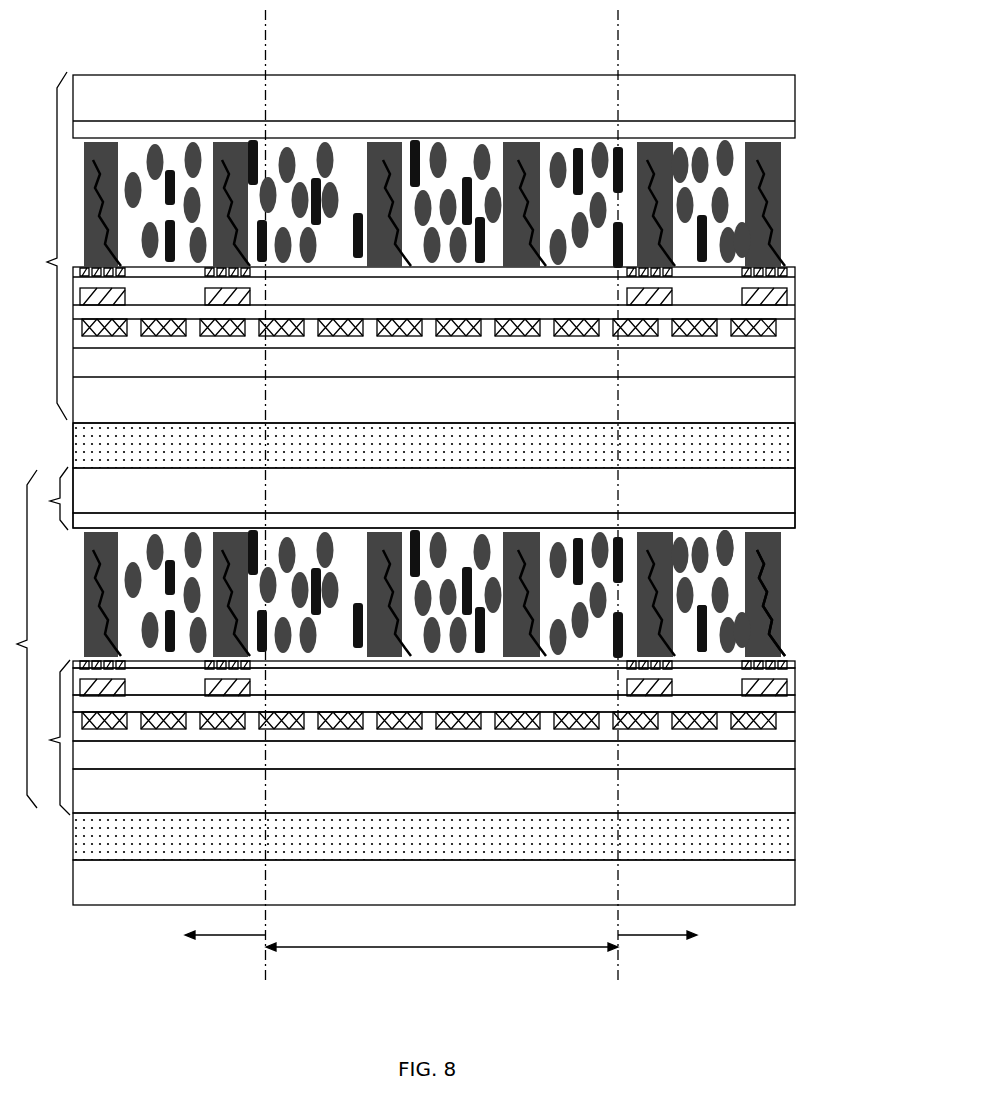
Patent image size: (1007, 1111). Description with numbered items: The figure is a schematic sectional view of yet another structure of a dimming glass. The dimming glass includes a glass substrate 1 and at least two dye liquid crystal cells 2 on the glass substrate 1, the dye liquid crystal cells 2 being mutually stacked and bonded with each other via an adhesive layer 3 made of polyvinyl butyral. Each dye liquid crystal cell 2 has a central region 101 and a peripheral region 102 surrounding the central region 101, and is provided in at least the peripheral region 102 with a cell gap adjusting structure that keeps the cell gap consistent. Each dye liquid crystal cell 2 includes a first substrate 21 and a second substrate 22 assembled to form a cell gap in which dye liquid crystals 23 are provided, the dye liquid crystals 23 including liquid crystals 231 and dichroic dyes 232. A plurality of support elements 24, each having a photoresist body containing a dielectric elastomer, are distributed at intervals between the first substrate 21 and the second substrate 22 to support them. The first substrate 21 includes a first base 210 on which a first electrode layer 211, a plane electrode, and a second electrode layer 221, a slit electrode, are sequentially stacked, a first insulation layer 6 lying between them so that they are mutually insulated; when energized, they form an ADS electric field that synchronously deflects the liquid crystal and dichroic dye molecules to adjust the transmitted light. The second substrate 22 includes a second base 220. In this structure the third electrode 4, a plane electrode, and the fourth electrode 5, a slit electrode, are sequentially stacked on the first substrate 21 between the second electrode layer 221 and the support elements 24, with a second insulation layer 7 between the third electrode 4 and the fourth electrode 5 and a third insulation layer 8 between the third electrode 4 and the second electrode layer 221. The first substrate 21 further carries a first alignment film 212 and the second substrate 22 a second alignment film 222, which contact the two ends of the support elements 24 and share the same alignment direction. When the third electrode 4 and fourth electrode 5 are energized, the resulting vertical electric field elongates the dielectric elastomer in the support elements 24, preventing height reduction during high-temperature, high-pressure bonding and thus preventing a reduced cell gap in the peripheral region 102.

The glass substrate 1 is at (775, 897).
The dye liquid crystal cell 2 is at (35, 440).
The adhesive layer 3 is at (783, 440).
The third electrode 4 is at (786, 687).
The fourth electrode 5 is at (783, 658).
The first insulation layer 6 is at (783, 735).
The second insulation layer 7 is at (797, 677).
The third insulation layer 8 is at (797, 703).
The first substrate 21 is at (460, 768).
The second substrate 22 is at (446, 498).
The dye liquid crystals 23 is at (856, 547).
The support element 24 is at (766, 590).
The central region 101 is at (442, 958).
The peripheral region 102 is at (444, 935).
The first base 210 is at (778, 783).
The first electrode layer 211 is at (775, 757).
The first alignment film 212 is at (797, 665).
The second base 220 is at (785, 488).
The second electrode layer 221 is at (798, 716).
The second alignment film 222 is at (790, 521).
The liquid crystals 231 is at (726, 548).
The dichroic dyes 232 is at (708, 628).